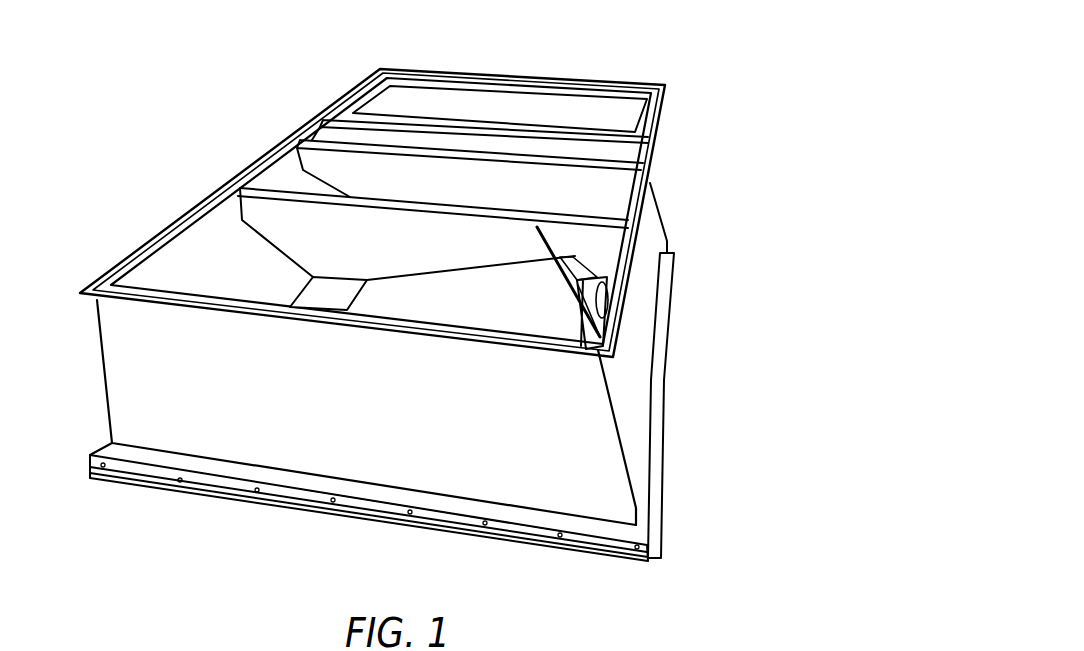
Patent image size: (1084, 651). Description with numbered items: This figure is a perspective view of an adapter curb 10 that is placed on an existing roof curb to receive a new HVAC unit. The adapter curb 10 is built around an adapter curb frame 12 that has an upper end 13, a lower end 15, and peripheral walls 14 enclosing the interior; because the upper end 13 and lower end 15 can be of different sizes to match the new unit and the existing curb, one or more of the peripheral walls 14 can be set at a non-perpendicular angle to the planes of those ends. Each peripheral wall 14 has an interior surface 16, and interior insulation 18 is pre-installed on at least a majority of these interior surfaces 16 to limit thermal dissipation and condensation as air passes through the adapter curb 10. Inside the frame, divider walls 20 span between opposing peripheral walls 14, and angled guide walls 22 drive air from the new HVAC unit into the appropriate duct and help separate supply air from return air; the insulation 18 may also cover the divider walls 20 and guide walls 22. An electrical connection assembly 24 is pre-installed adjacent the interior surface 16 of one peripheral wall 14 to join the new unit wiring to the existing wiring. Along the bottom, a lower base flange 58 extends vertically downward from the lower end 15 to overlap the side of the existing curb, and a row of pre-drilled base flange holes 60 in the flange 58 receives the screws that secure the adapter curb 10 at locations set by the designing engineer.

The adapter curb 10 is at (791, 79).
The adapter curb frame 12 is at (610, 493).
The upper end 13 is at (149, 227).
The peripheral walls 14 is at (127, 382).
The lower end 15 is at (188, 495).
The interior surface 16 is at (223, 193).
The interior insulation 18 is at (458, 233).
The divider walls 20 is at (270, 218).
The angled guide walls 22 is at (533, 263).
The electrical connection assembly 24 is at (622, 324).
The lower base flange 58 is at (602, 545).
The base flange holes 60 is at (545, 535).